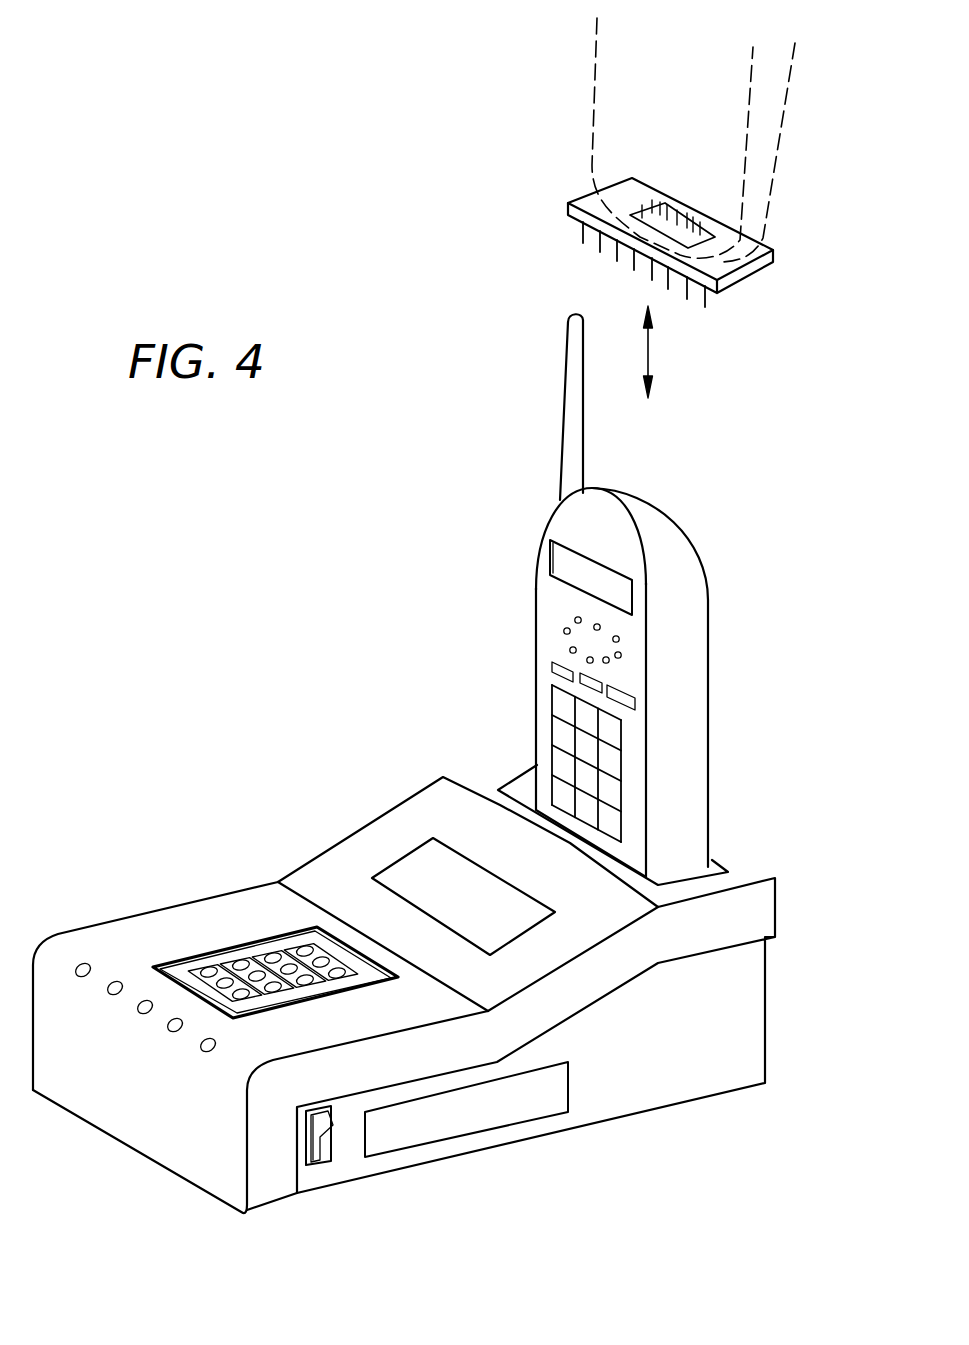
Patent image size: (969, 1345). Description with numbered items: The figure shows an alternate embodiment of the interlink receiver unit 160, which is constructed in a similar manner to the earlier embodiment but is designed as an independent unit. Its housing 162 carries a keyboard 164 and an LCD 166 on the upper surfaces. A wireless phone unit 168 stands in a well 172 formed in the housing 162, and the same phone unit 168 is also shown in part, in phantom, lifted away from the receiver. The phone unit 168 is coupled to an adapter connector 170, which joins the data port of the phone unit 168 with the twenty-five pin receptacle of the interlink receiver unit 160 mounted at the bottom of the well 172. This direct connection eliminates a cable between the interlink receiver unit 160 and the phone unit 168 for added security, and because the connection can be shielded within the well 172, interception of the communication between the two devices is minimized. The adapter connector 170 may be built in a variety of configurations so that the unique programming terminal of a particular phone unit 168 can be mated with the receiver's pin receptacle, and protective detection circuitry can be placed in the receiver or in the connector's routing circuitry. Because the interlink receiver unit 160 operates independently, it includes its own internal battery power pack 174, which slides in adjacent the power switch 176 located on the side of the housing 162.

The interlink receiver unit 160 is at (328, 848).
The housing 162 is at (125, 918).
The keyboard 164 is at (227, 947).
The LCD 166 is at (407, 853).
The wireless phone unit 168 is at (535, 592).
The adapter connector 170 is at (578, 220).
The well 172 is at (522, 788).
The internal battery power pack 174 is at (457, 1137).
The power switch 176 is at (327, 1162).